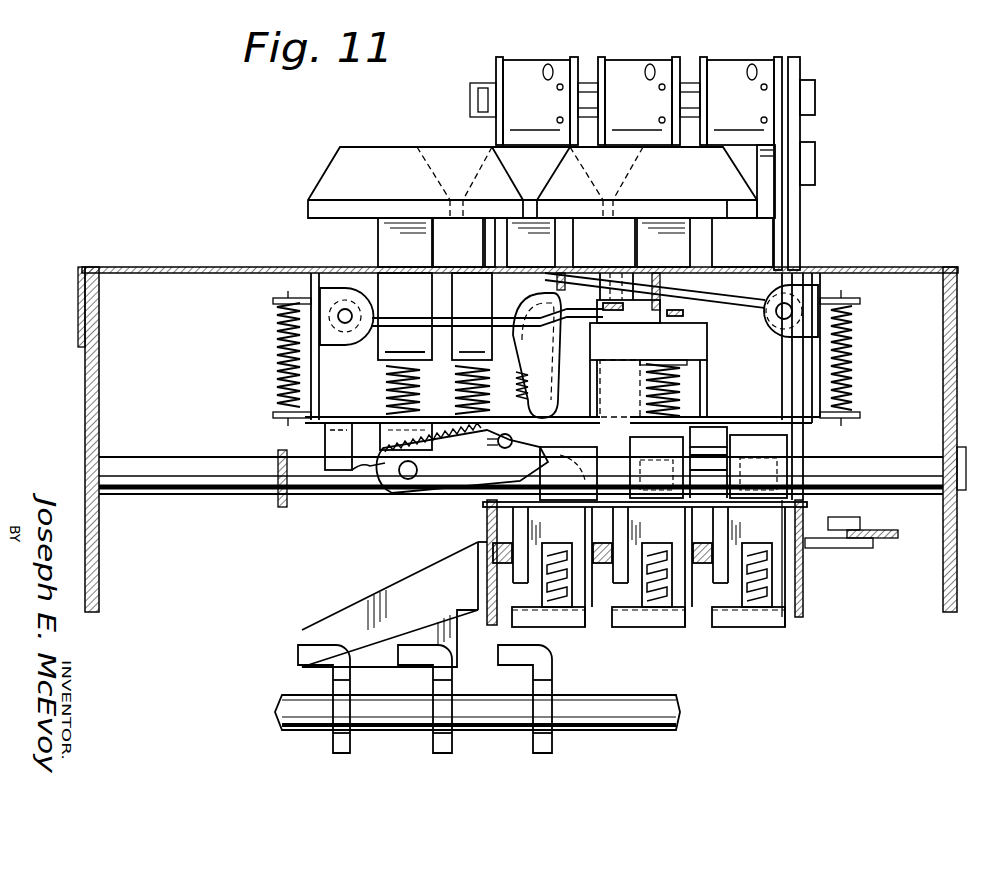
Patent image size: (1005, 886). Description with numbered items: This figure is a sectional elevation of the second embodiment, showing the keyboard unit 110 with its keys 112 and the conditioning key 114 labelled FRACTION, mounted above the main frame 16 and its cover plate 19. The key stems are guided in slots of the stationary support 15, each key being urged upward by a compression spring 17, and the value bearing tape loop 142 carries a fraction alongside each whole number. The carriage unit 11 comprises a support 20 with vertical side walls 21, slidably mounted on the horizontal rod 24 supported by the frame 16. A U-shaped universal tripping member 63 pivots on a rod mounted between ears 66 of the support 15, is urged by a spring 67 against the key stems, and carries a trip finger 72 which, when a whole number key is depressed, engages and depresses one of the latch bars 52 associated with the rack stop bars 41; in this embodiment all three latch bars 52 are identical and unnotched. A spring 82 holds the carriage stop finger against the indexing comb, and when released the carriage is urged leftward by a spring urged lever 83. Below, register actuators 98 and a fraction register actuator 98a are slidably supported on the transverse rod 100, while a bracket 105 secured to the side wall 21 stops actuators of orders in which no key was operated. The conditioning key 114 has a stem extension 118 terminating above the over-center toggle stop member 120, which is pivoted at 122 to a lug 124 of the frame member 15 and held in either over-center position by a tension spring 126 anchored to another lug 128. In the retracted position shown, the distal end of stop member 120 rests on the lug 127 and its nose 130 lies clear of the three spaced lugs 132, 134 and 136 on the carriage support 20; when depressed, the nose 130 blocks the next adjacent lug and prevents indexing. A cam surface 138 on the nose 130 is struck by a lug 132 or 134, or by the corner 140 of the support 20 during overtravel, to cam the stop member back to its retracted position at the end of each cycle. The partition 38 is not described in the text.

The carriage unit 11 is at (815, 503).
The support 15 is at (357, 417).
The frame 16 is at (99, 398).
The compression spring 17 is at (680, 400).
The cover plate 19 is at (275, 267).
The support 20 is at (806, 585).
The vertical side wall 21 is at (804, 570).
The rod 24 is at (900, 457).
The partition plate 38 is at (487, 575).
The rack stop bar 41 is at (663, 467).
The latch bar 52 is at (745, 460).
The universal tripping member 63 is at (748, 300).
The ear 66 is at (800, 296).
The spring 67 is at (855, 345).
The trip finger 72 is at (541, 355).
The spring 82 is at (277, 364).
The spring urged lever 83 is at (885, 540).
The register actuator 98 is at (350, 742).
The register actuator 98a is at (552, 742).
The transverse rod 100 is at (415, 715).
The bracket 105 is at (335, 617).
The keyboard unit 110 is at (330, 187).
The key 112 is at (373, 156).
The conditioning key 114 is at (718, 190).
The stem extension 118 is at (608, 382).
The toggle stop member 120 is at (585, 423).
The pivot 122 is at (398, 477).
The lug 124 is at (425, 417).
The tension spring 126 is at (455, 482).
The lug 127 is at (706, 420).
The lug 128 is at (325, 441).
The nose 130 is at (539, 567).
The lug 132 is at (640, 507).
The lug 134 is at (665, 507).
The lug 136 is at (745, 507).
The cam surface 138 is at (490, 467).
The corner 140 is at (487, 550).
The value bearing tape loop 142 is at (527, 70).